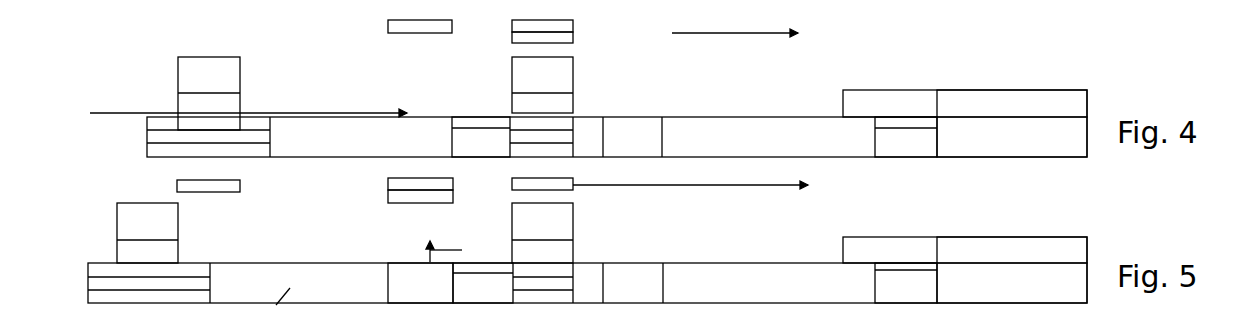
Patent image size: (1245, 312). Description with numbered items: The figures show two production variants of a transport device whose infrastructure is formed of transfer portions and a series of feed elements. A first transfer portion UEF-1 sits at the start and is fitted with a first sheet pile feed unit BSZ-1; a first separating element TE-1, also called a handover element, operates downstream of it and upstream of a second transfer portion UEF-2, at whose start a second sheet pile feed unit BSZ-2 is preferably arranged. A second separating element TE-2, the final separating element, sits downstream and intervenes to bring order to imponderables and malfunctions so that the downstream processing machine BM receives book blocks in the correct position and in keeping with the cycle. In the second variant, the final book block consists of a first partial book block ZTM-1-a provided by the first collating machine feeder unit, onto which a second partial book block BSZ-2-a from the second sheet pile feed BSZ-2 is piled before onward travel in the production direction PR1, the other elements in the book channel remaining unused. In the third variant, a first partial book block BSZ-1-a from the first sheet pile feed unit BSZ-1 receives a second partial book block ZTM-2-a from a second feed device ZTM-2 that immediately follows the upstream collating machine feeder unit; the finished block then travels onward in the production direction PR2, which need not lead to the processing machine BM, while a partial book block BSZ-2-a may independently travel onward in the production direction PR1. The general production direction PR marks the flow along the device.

In FIG. 4, the first transfer portion UEF-1 is at (322, 0).
In FIG. 4, the second transfer portion UEF-2 is at (805, 0).
In FIG. 4, the first partial book block ZTM-1-a is at (422, 27).
In FIG. 5, the second partial book block ZTM-2-a is at (400, 182).
In FIG. 5, the second feed device ZTM-2 is at (415, 278).
In FIG. 5, the first sheet pile feed unit BSZ-1 is at (118, 227).
In FIG. 5, the first partial book block BSZ-1-a is at (218, 186).
In FIG. 4, the second sheet pile feed unit BSZ-2 is at (562, 78).
In FIG. 5, the second sheet pile feed unit BSZ-2 is at (552, 225).
In FIG. 4, the second partial book block BSZ-2-a is at (573, 22).
In FIG. 5, the second partial book block BSZ-2-a is at (573, 180).
In FIG. 4, the production direction PR is at (248, 102).
In FIG. 4, the production direction PR1 is at (735, 23).
In FIG. 5, the production direction PR1 is at (714, 185).
In FIG. 5, the production direction PR2 is at (465, 254).
In FIG. 4, the first separating element TE-1 is at (481, 137).
In FIG. 5, the first separating element TE-1 is at (483, 283).
In FIG. 4, the second separating element TE-2 is at (906, 137).
In FIG. 5, the second separating element TE-2 is at (906, 283).
In FIG. 4, the processing machine BM is at (1022, 120).
In FIG. 5, the processing machine BM is at (1022, 265).